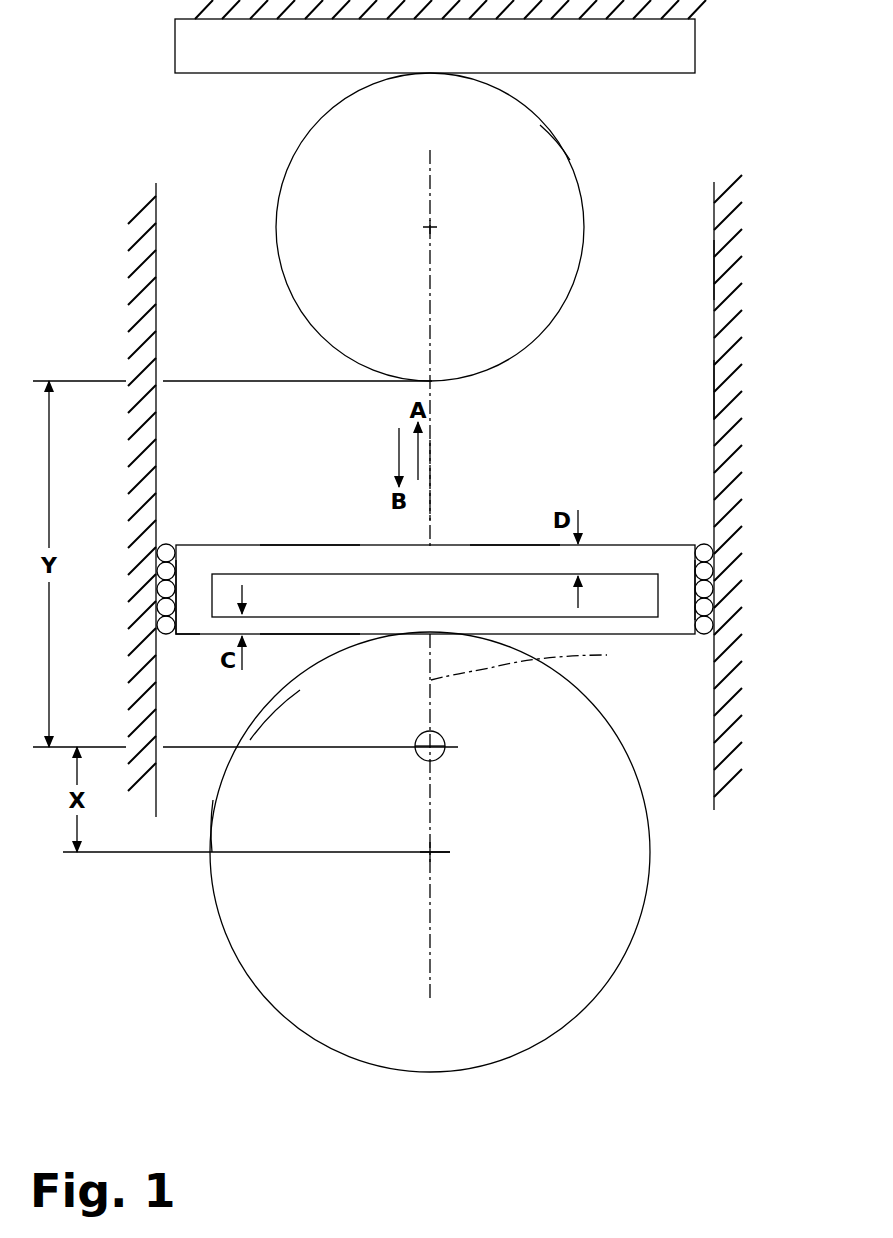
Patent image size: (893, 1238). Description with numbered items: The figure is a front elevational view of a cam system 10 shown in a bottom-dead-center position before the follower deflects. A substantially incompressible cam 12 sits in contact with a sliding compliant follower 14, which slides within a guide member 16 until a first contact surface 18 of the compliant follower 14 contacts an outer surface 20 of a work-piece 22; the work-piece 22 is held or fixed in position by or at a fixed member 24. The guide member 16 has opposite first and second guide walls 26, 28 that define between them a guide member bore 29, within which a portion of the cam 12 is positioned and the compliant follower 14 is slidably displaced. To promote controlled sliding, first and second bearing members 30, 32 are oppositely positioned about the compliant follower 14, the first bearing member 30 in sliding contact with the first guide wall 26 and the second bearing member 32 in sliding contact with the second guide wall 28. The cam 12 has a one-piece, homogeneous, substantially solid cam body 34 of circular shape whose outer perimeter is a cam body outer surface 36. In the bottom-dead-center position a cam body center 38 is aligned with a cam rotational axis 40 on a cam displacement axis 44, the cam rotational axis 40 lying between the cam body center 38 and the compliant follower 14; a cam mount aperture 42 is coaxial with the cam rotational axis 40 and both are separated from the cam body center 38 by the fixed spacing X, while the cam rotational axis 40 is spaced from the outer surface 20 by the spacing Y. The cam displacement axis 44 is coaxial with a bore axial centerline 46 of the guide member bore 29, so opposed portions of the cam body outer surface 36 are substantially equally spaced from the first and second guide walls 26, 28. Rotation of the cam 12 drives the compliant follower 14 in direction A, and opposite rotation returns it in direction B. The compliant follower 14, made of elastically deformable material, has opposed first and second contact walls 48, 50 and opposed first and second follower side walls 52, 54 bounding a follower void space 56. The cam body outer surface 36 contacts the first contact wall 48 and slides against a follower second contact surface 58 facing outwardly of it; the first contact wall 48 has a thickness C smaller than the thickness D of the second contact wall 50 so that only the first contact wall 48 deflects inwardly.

The cam system 10 is at (757, 73).
The cam 12 is at (635, 897).
The compliant follower 14 is at (597, 548).
The guide member 16 is at (716, 265).
The first contact surface 18 is at (515, 544).
The outer surface 20 is at (527, 354).
The work-piece 22 is at (560, 168).
The fixed member 24 is at (187, 52).
The first guide wall 26 is at (162, 437).
The second guide wall 28 is at (710, 218).
The guide member bore 29 is at (696, 388).
The first bearing member 30 is at (165, 553).
The second bearing member 32 is at (702, 634).
The cam body 34 is at (290, 738).
The cam body outer surface 36 is at (210, 820).
The cam body center 38 is at (431, 852).
The cam rotational axis 40 is at (443, 737).
The cam mount aperture 42 is at (443, 755).
The cam displacement axis 44 is at (535, 663).
The bore axial centerline 46 is at (430, 518).
The first contact wall 48 is at (310, 628).
The second contact wall 50 is at (305, 563).
The first follower side wall 52 is at (195, 603).
The second follower side wall 54 is at (673, 568).
The follower void space 56 is at (267, 590).
The follower second contact surface 58 is at (192, 638).